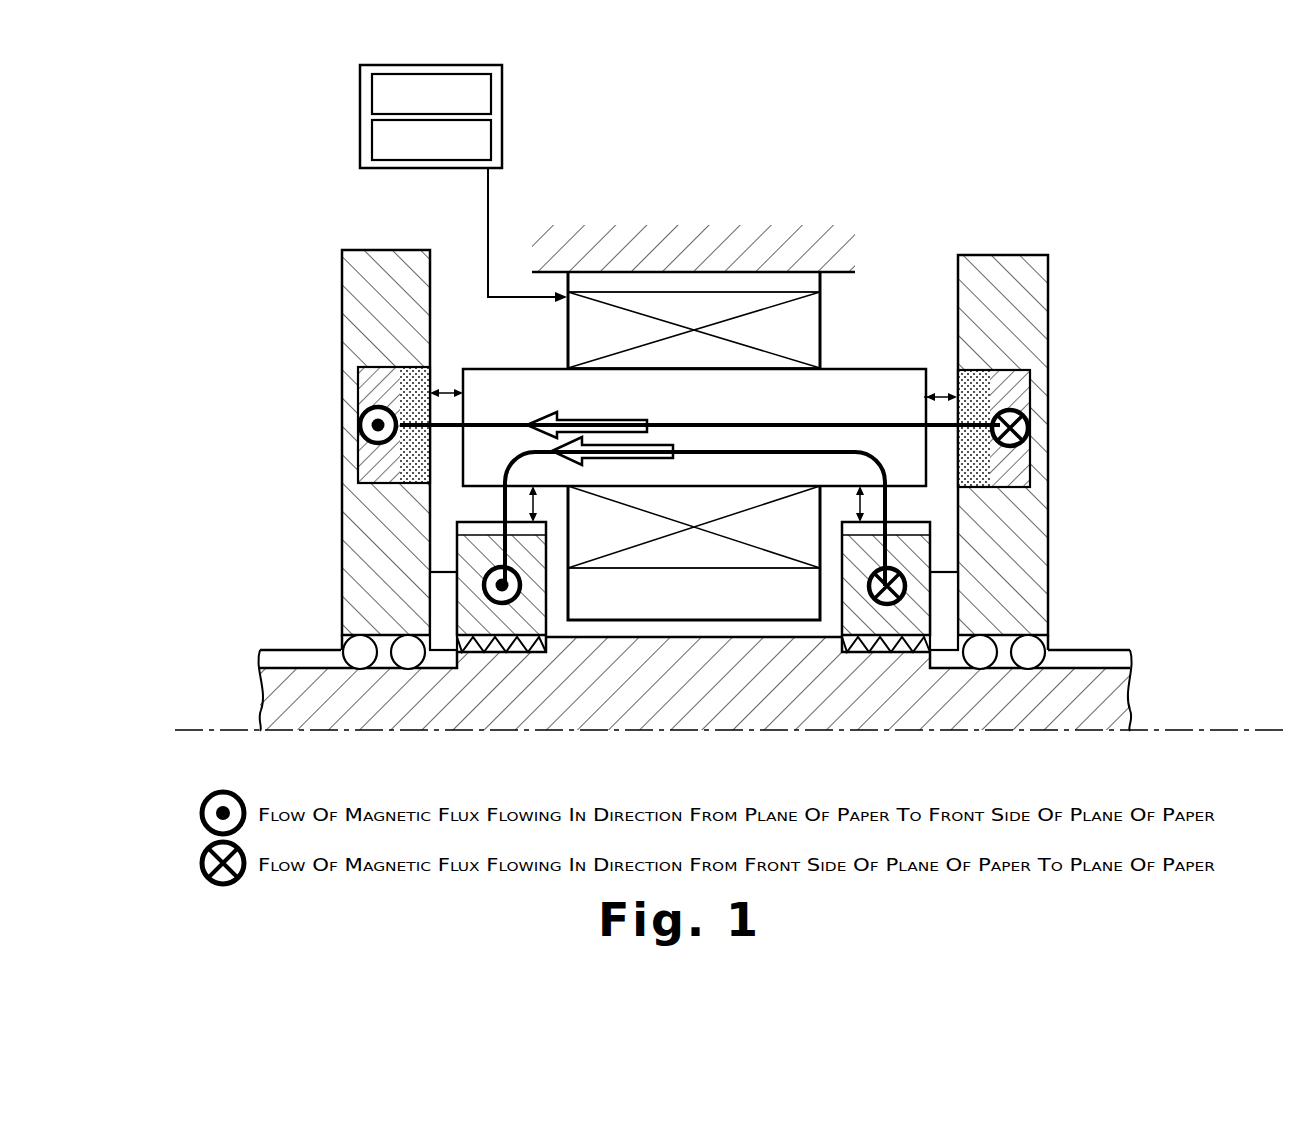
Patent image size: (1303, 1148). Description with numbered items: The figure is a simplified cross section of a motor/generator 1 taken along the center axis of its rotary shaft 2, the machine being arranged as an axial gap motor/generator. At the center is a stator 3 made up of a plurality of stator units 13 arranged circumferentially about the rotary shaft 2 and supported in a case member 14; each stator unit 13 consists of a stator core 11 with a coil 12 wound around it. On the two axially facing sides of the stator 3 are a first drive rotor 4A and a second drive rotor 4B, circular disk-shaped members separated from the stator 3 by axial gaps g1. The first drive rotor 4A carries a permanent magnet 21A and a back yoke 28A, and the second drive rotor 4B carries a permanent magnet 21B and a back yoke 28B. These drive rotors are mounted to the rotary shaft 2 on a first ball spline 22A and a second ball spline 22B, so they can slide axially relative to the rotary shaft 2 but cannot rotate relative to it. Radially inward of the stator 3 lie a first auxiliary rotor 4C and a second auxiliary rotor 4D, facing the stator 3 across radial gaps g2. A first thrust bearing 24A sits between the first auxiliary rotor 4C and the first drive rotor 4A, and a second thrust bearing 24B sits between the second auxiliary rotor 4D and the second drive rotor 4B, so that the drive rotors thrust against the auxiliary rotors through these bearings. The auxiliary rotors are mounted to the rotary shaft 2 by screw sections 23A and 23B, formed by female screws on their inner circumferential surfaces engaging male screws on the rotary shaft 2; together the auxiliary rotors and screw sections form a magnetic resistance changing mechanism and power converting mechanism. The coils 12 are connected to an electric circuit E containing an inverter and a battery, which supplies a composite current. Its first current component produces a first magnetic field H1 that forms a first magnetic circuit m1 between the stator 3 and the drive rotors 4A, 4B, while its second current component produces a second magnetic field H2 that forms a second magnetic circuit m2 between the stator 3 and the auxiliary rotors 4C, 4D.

The motor/generator 1 is at (1072, 274).
The rotary shaft 2 is at (1050, 708).
The stator 3 is at (737, 376).
The first drive rotor 4A is at (374, 262).
The second drive rotor 4B is at (1000, 262).
The first auxiliary rotor 4C is at (484, 548).
The second auxiliary rotor 4D is at (907, 548).
The stator core 11 is at (641, 390).
The coil 12 is at (745, 308).
The stator unit 13 is at (694, 350).
The case member 14 is at (575, 258).
The permanent magnet 21A is at (331, 425).
The permanent magnet 21B is at (1054, 428).
The first ball spline 22A is at (360, 640).
The second ball spline 22B is at (1025, 640).
The screw section 23A is at (495, 655).
The screw section 23B is at (893, 655).
The first thrust bearing 24A is at (440, 597).
The second thrust bearing 24B is at (945, 605).
The back yoke 28A is at (375, 462).
The back yoke 28B is at (1010, 467).
The electric circuit E is at (503, 115).
The axial gap g1 is at (443, 390).
The radial gap g2 is at (533, 503).
The first magnetic field H1 is at (577, 417).
The second magnetic field H2 is at (630, 440).
The first magnetic circuit m1 is at (735, 426).
The second magnetic circuit m2 is at (678, 450).